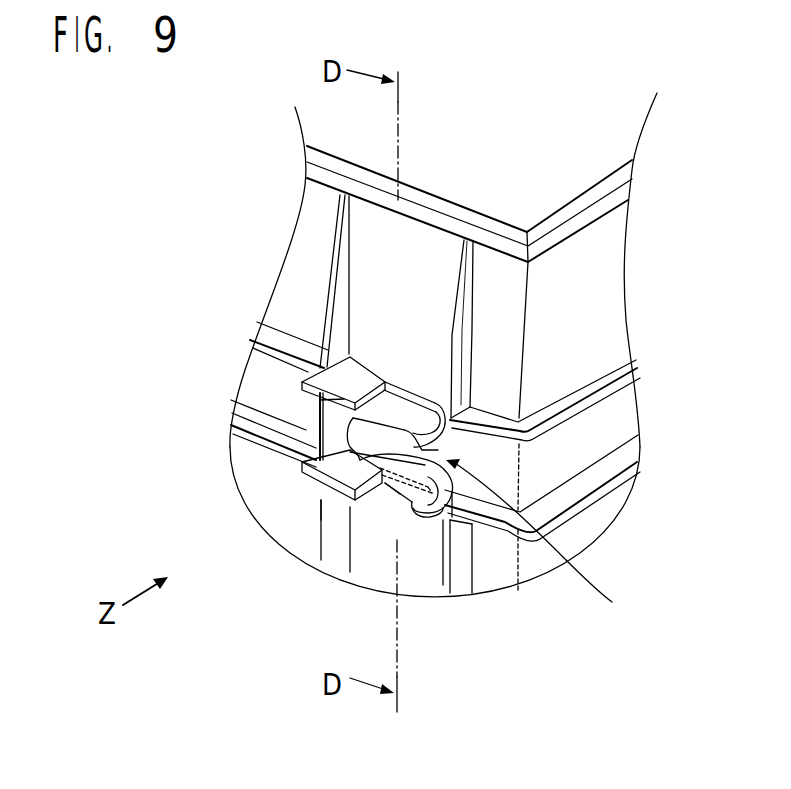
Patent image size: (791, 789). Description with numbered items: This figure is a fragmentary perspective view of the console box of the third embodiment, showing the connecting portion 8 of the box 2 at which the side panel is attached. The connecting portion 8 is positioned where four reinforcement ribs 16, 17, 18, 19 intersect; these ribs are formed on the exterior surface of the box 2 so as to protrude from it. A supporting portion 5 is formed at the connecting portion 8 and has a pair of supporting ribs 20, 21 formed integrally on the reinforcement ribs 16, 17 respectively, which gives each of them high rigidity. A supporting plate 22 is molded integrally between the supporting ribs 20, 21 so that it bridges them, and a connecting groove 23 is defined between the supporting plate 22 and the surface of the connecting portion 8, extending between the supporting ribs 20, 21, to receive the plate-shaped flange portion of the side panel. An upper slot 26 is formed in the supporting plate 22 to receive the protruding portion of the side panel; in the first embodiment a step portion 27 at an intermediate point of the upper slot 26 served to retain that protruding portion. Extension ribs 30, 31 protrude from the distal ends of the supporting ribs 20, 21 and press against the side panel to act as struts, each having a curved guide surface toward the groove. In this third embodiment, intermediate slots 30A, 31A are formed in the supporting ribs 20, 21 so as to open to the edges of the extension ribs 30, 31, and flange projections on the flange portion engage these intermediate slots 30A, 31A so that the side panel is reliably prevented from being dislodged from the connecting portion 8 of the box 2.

The box 2 is at (608, 302).
The supporting portion 5 is at (305, 422).
The connecting portion 8 is at (378, 348).
The reinforcement rib 16 is at (282, 333).
The reinforcement rib 17 is at (253, 422).
The reinforcement rib 18 is at (467, 342).
The reinforcement rib 19 is at (340, 287).
The supporting rib 20 is at (308, 416).
The supporting rib 21 is at (345, 500).
The supporting plate 22 is at (330, 456).
The connecting groove 23 is at (543, 539).
The upper slot 26 is at (352, 484).
The step portion 27 is at (350, 490).
The extension rib 30 is at (445, 397).
The intermediate slot 30A is at (395, 398).
The extension rib 31 is at (335, 488).
The intermediate slot 31A is at (392, 490).